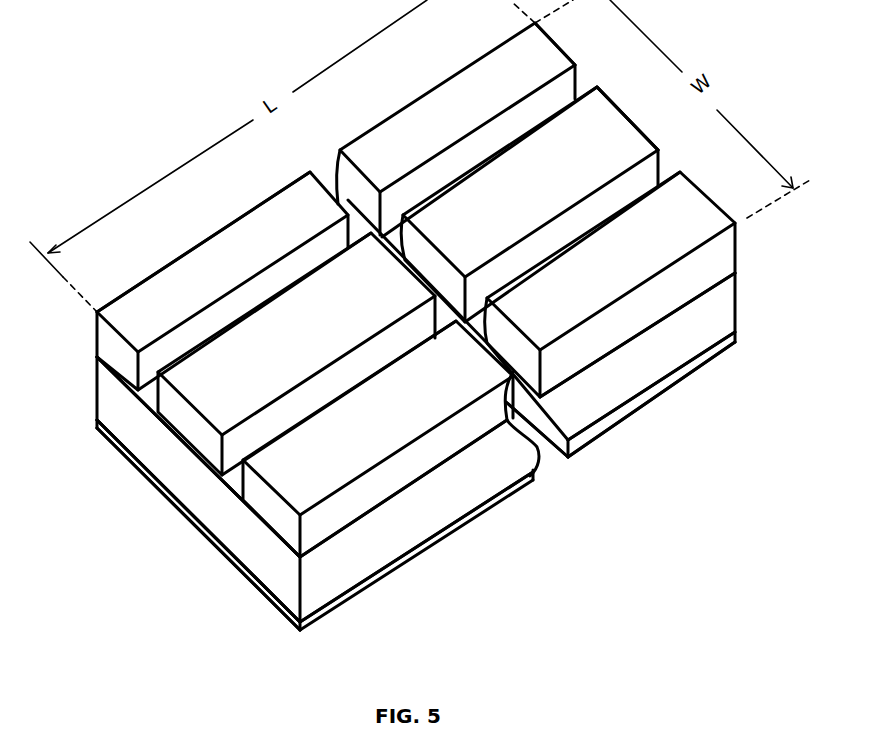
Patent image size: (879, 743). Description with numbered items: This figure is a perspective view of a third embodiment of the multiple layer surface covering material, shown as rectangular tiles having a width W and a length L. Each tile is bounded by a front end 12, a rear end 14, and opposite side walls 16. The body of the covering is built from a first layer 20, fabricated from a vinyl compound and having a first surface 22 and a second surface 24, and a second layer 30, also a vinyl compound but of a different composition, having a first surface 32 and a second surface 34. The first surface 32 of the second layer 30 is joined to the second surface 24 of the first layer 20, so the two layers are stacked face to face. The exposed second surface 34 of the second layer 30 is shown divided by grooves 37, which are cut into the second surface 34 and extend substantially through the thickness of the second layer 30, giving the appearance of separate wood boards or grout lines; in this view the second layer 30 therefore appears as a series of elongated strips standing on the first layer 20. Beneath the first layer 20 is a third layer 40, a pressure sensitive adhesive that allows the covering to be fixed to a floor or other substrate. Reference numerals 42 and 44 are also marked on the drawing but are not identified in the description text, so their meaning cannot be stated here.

The front end 12 is at (213, 511).
The rear end 14 is at (646, 125).
The side walls 16 is at (278, 192).
The first layer 20 is at (427, 523).
The first surface 22 is at (121, 444).
The second surface 24 is at (143, 406).
The second layer 30 is at (402, 474).
The first surface 32 is at (121, 374).
The second surface 34 is at (224, 277).
The grooves 37 is at (561, 86).
The third layer 40 is at (394, 567).
The bottom surface 42 is at (247, 586).
The side surface of substrate 44 is at (262, 574).